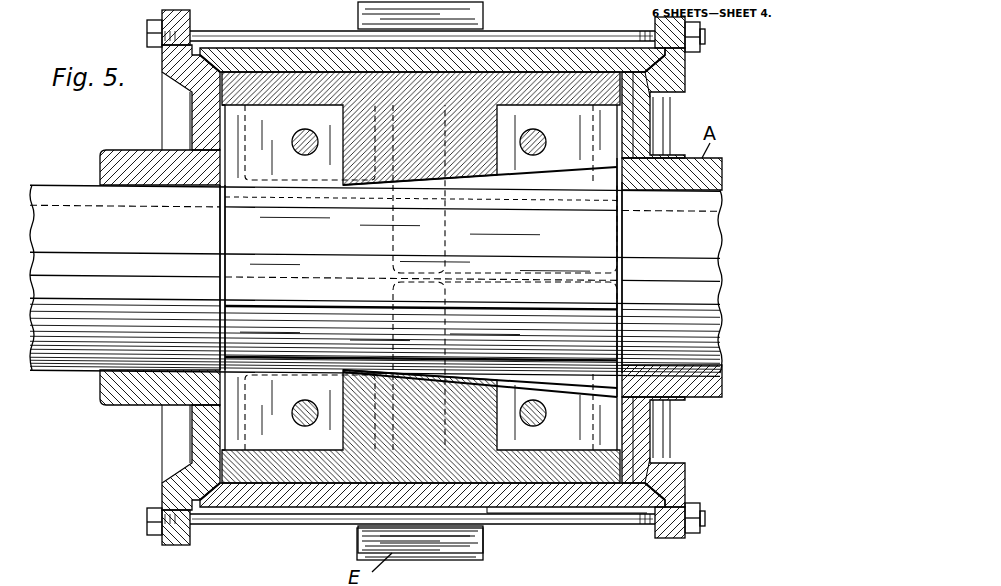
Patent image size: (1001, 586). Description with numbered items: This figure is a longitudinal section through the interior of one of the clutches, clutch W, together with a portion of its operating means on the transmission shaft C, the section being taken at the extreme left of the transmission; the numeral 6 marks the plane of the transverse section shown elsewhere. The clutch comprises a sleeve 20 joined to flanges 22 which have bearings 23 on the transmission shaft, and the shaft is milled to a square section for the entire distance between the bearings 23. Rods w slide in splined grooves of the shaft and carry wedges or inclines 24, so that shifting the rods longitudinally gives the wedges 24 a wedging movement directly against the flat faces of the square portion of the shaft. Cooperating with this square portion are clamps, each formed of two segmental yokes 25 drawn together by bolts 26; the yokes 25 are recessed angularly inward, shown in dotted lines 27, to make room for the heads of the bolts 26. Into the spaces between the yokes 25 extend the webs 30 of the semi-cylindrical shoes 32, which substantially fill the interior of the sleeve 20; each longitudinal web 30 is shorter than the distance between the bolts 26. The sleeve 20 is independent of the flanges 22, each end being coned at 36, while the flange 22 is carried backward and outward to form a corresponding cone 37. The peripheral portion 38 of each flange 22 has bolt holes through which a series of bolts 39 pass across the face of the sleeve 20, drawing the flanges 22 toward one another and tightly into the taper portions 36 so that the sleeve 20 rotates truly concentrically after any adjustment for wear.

The section line 6 is at (186, 11).
The sleeve 20 is at (570, 55).
The flange 22 is at (200, 119).
The bearing 23 is at (127, 162).
The wedge 24 is at (572, 178).
The yoke 25 is at (274, 160).
The bolt 26 is at (316, 132).
The angular recess 27 is at (590, 200).
The web 30 is at (421, 277).
The shoe 32 is at (573, 478).
The taper portion 36 is at (206, 62).
The cone 37 is at (163, 76).
The peripheral portion 38 is at (192, 20).
The bolt 39 is at (314, 36).